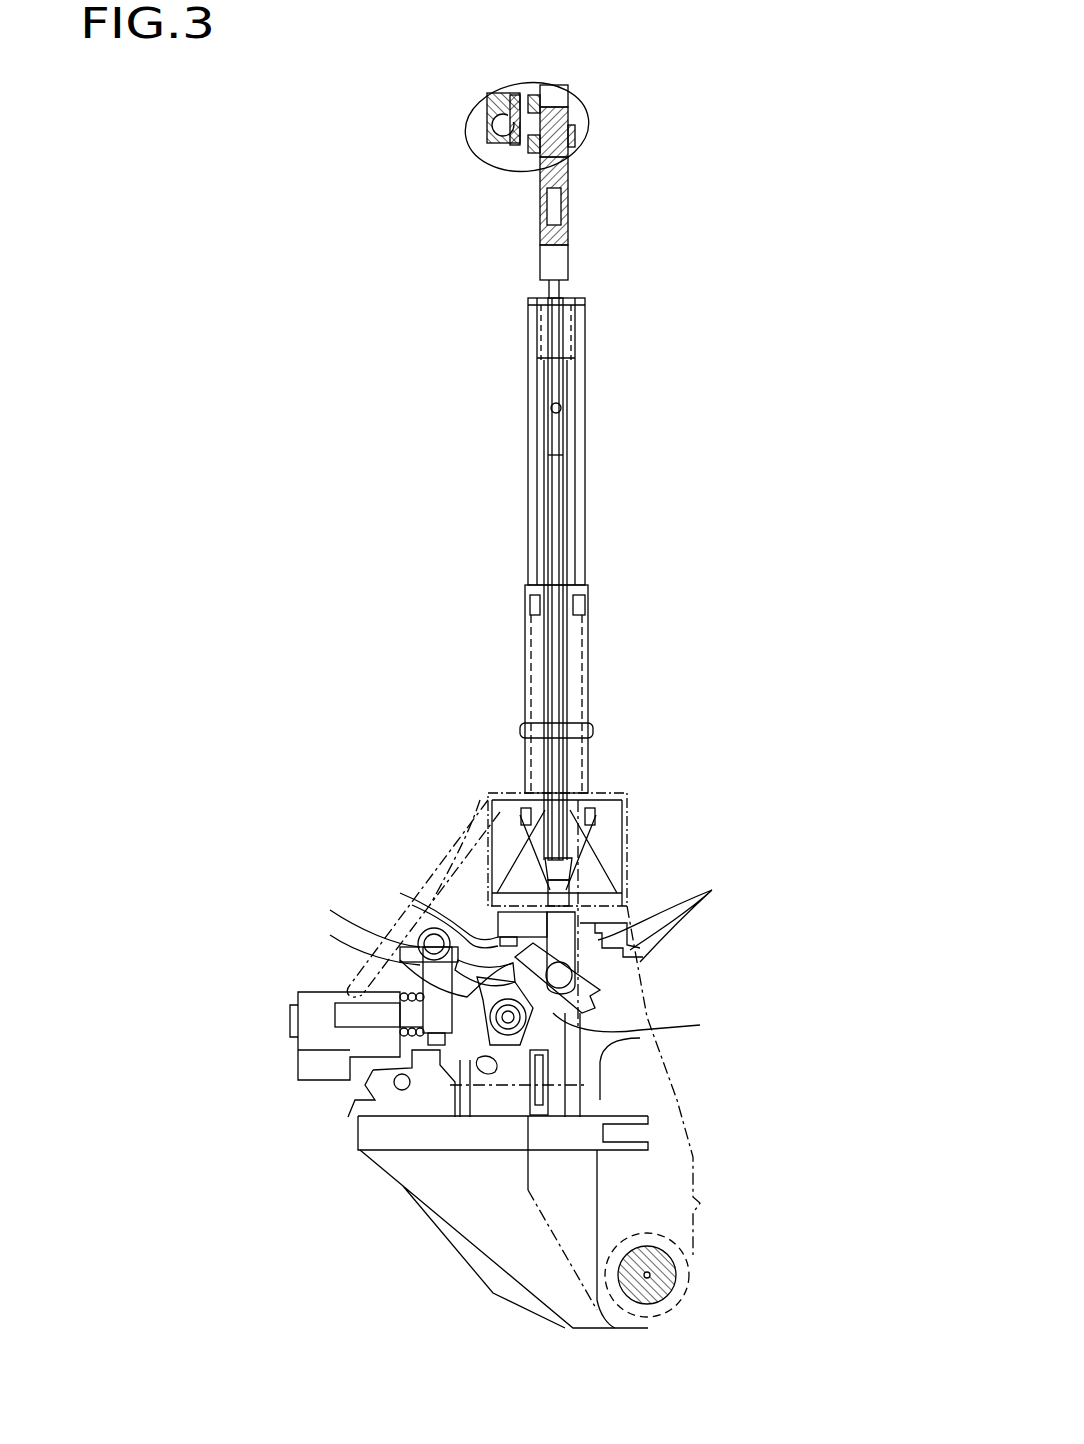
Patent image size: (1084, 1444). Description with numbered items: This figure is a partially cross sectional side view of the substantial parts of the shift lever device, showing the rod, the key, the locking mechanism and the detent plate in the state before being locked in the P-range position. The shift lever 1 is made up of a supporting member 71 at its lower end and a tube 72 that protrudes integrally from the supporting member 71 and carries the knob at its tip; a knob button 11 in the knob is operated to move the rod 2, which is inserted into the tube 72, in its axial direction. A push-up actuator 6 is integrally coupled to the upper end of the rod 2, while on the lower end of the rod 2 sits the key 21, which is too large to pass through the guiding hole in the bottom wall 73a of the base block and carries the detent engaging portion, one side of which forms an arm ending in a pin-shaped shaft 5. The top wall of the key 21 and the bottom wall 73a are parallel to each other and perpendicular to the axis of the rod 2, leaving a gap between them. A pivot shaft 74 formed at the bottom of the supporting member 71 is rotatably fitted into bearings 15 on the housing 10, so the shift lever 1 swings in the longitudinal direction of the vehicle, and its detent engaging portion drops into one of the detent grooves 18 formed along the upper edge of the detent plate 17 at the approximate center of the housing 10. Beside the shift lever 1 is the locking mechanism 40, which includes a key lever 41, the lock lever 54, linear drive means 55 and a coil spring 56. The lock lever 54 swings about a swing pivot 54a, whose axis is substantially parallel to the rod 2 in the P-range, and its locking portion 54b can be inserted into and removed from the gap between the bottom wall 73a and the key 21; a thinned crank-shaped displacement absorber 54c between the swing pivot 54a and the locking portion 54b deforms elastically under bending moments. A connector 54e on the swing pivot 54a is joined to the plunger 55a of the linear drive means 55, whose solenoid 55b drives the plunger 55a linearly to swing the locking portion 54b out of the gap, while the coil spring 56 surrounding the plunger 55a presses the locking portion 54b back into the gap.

The shift lever 1 is at (588, 411).
The rod 2 is at (565, 500).
The pin-shaped shaft 5 is at (580, 990).
The push-up actuator 6 is at (575, 172).
The housing 10 is at (412, 1206).
The knob button 11 is at (470, 100).
The bearings 15 is at (675, 1252).
The detent plate 17 is at (620, 970).
The detent grooves 18 is at (675, 917).
The key 21 is at (610, 872).
The locking mechanism 40 is at (418, 1055).
The key lever 41 is at (600, 1010).
The lock lever 54 is at (408, 950).
The swing pivot 54a is at (423, 977).
The locking portion 54b is at (540, 888).
The displacement absorber 54c is at (463, 930).
The connector 54e is at (430, 970).
The linear drive means 55 is at (295, 1015).
The plunger 55a is at (325, 1065).
The solenoid 55b is at (300, 1050).
The coil spring 56 is at (405, 1040).
The supporting member 71 is at (455, 860).
The tube 72 is at (590, 545).
The bottom wall 73a is at (640, 900).
The pivot shaft 74 is at (680, 1282).